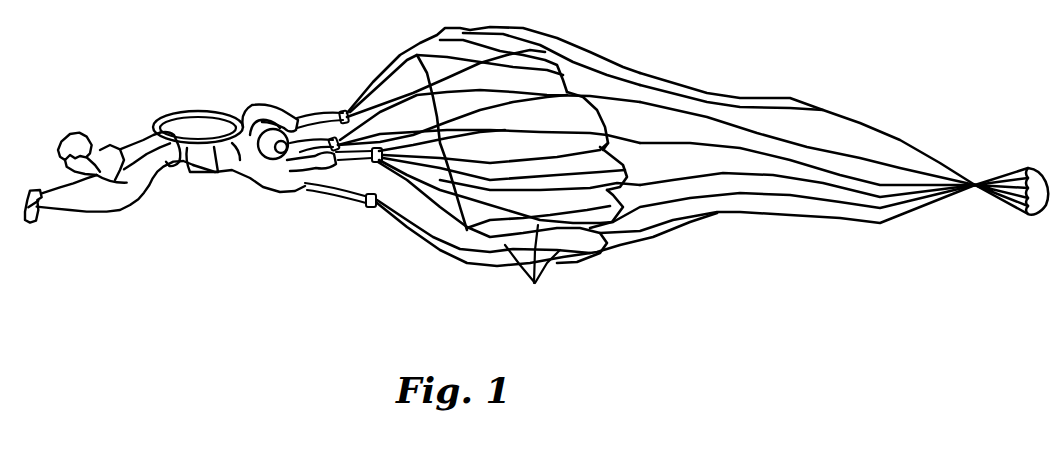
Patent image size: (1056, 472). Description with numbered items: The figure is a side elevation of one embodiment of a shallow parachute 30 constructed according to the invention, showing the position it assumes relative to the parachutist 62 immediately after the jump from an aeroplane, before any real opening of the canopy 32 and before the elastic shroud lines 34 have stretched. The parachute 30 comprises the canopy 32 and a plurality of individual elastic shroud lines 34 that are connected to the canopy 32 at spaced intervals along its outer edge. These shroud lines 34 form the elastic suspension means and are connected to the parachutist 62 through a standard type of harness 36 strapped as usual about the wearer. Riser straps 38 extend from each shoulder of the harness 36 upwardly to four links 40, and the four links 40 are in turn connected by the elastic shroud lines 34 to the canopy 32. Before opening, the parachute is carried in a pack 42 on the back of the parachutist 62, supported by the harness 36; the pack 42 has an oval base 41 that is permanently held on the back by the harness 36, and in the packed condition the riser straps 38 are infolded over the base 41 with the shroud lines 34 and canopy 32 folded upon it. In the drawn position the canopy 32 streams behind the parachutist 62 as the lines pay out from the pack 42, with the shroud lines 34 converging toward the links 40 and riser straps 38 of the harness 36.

The parachute 30 is at (629, 256).
The canopy 32 is at (782, 210).
The shroud lines 34 is at (535, 283).
The harness 36 is at (218, 174).
The riser straps 38 is at (309, 113).
The links 40 is at (376, 164).
The base 41 is at (216, 112).
The pack 42 is at (181, 110).
The parachutist 62 is at (148, 197).